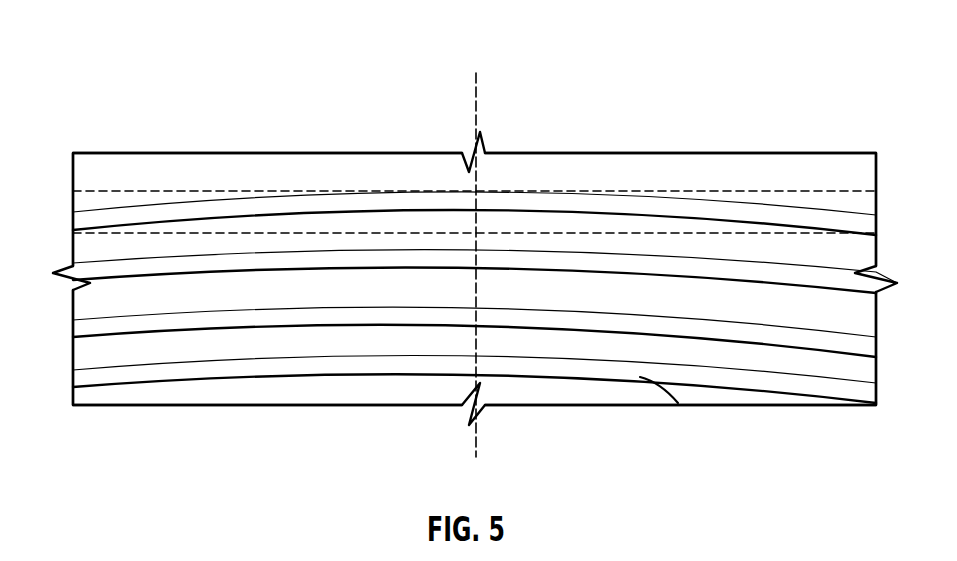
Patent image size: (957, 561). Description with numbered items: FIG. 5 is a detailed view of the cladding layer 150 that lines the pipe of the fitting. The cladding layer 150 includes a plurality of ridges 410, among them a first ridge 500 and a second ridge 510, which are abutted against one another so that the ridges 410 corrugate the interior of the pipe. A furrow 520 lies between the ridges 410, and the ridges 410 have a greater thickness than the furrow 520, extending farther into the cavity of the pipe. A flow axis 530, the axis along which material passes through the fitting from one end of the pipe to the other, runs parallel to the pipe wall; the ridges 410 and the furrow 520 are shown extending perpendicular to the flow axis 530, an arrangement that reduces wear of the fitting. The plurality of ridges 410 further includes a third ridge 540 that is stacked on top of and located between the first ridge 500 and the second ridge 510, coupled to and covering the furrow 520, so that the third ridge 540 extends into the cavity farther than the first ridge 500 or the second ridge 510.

The cladding layer 150 is at (158, 52).
The plurality of ridges 410 is at (73, 321).
The first ridge 500 is at (90, 173).
The second ridge 510 is at (83, 247).
The furrow 520 is at (227, 212).
The flow axis 530 is at (477, 110).
The third ridge 540 is at (780, 191).